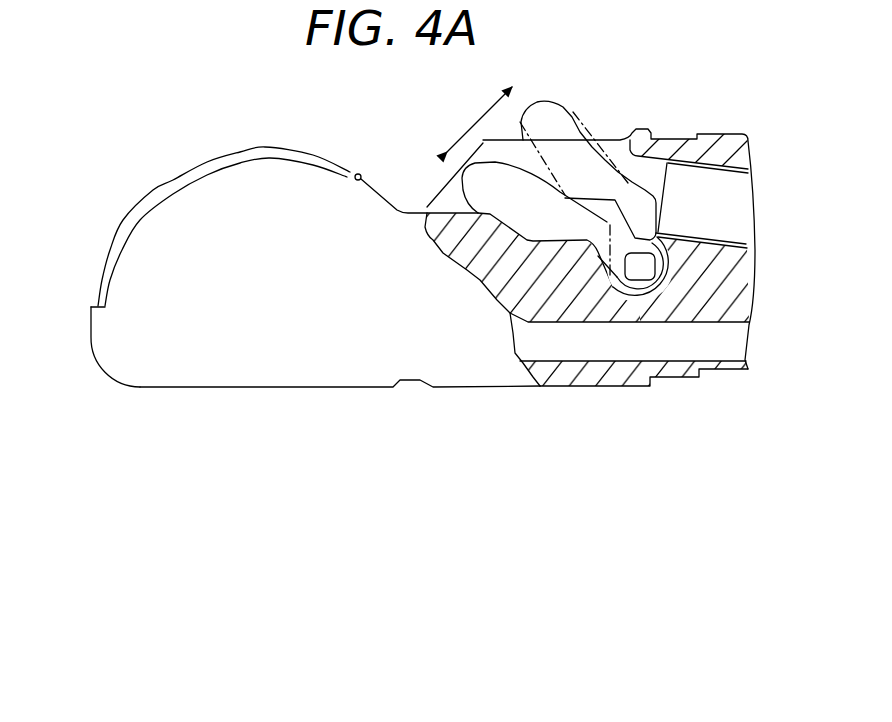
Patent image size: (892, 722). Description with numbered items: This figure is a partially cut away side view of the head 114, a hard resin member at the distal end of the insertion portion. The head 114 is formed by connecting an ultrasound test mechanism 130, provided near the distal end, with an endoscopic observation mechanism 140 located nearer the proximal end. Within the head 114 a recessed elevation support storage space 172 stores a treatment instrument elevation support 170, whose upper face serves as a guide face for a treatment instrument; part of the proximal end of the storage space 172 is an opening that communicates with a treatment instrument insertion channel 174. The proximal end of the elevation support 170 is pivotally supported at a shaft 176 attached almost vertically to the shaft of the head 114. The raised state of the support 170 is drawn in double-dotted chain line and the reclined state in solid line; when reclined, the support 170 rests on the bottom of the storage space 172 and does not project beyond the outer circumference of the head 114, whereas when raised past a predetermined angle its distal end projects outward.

The head 114 is at (195, 495).
The ultrasound test mechanism 130 is at (225, 397).
The endoscopic observation mechanism 140 is at (492, 397).
The treatment instrument elevation support 170 is at (452, 178).
The elevation support storage space 172 is at (615, 137).
The treatment instrument insertion channel 174 is at (712, 138).
The shaft 176 is at (640, 282).